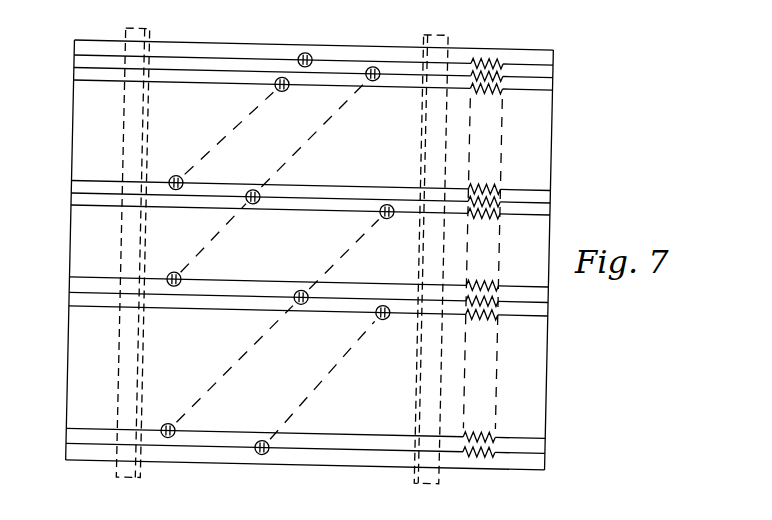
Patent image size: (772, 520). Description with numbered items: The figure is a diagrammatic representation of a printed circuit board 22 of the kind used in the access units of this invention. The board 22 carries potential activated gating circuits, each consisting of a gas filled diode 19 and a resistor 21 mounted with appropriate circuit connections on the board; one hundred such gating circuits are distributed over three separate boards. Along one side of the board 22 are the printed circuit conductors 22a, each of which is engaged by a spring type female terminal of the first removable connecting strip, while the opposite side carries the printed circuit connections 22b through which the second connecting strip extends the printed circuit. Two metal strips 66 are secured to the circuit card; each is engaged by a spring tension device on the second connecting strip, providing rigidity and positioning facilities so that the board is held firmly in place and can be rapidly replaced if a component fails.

The gas filled diode 19 is at (306, 55).
The resistor 21 is at (488, 62).
The printed circuit board 22 is at (292, 250).
The printed circuit conductors 22a is at (535, 65).
The printed circuit connections 22b is at (100, 23).
The metal strips 66 is at (150, 28).